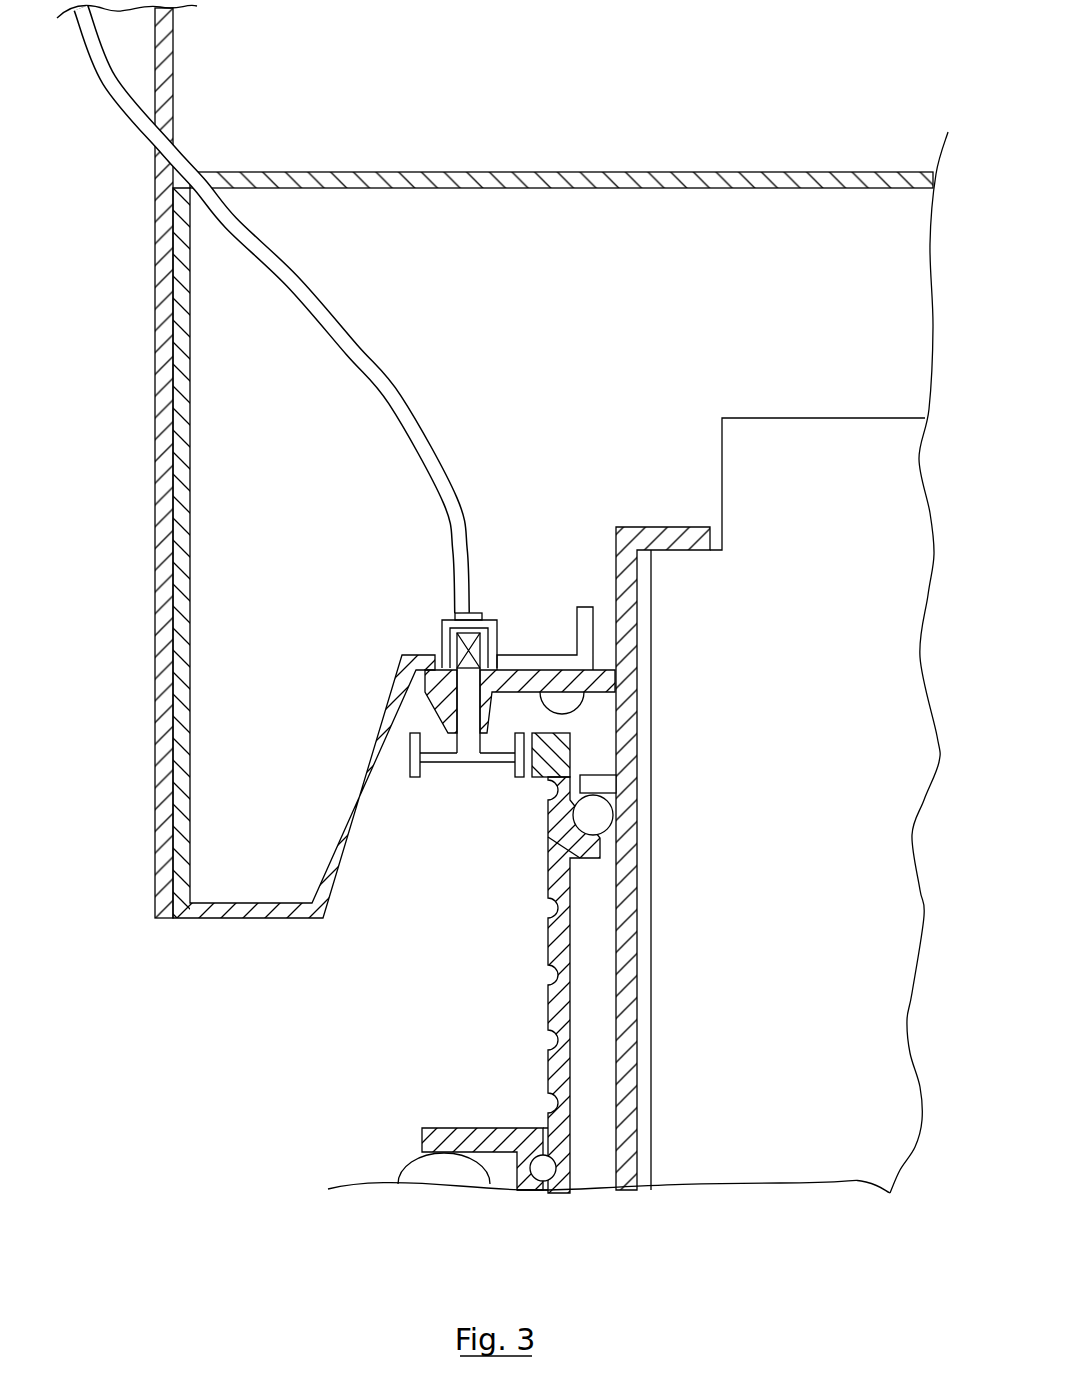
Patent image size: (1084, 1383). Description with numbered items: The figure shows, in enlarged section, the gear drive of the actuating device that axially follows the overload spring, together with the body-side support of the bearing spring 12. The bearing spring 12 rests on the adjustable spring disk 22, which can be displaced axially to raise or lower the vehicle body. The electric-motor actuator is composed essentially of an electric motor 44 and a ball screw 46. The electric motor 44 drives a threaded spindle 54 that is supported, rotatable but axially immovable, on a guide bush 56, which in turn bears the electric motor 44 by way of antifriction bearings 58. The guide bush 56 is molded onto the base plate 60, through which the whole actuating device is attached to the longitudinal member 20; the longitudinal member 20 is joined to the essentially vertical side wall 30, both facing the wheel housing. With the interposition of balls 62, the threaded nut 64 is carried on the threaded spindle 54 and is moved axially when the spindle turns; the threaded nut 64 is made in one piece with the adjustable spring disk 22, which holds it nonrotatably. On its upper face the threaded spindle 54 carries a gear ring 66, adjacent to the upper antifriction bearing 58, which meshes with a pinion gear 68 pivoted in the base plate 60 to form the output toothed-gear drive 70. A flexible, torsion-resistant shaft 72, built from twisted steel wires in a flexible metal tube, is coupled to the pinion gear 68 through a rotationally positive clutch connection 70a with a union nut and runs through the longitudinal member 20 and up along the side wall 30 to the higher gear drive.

The bearing spring 12 is at (405, 1175).
The longitudinal member 20 is at (192, 655).
The adjustable spring disk 22 is at (470, 1133).
The side wall 30 is at (176, 62).
The electric motor 44 is at (778, 954).
The ball screw 46 is at (515, 1102).
The threaded spindle 54 is at (546, 945).
The guide bush 56 is at (612, 1017).
The antifriction bearing 58 is at (593, 815).
The base plate 60 is at (562, 712).
The balls 62 is at (556, 1168).
The threaded nut 64 is at (507, 1192).
The gear ring 66 is at (540, 738).
The pinion gear 68 is at (408, 756).
The output toothed-gear drive 70 is at (486, 798).
The clutch connection 70a is at (436, 626).
The flexible shaft 72 is at (402, 389).